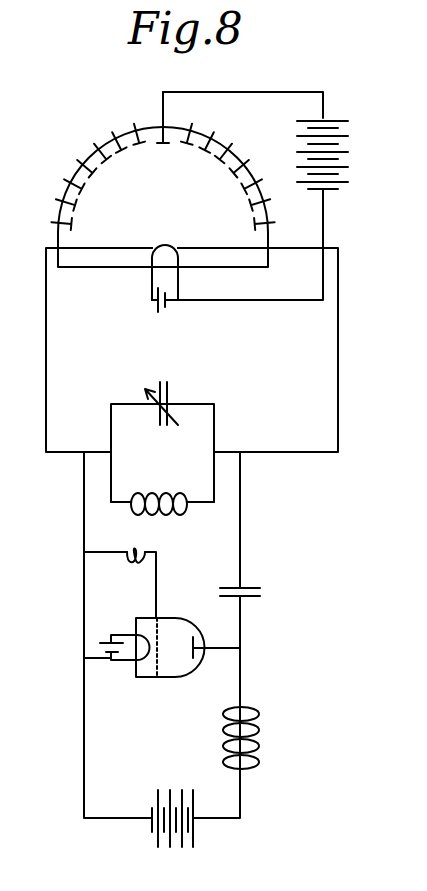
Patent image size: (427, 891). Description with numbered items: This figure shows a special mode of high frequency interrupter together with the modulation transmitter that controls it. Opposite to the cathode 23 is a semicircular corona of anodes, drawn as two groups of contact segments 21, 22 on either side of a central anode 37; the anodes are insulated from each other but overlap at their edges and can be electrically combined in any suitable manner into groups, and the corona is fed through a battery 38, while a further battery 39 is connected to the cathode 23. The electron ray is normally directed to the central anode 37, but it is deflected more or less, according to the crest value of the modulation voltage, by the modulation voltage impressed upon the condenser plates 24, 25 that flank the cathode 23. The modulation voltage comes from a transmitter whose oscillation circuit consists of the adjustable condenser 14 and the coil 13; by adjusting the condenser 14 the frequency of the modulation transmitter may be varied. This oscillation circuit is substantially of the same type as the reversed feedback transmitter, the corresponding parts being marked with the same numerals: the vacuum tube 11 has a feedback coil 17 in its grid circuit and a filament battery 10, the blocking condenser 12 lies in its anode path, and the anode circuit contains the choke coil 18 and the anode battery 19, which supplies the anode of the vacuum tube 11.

The filament battery 10 is at (121, 638).
The vacuum tube 11 is at (170, 647).
The blocking condenser 12 is at (243, 582).
The coil of the wave generating circuit 13 is at (162, 493).
The adjustable condenser 14 is at (162, 435).
The grid leak / inductance 17 is at (134, 566).
The choke coil of the anode circuit 18 is at (252, 737).
The anode battery 19 is at (187, 819).
The contact segments (left) 21 is at (98, 177).
The contact segments (right) 22 is at (228, 177).
The cathode 23 is at (165, 272).
The condenser plate 24 is at (147, 253).
The condenser plate 25 is at (190, 253).
The center contact 37 is at (163, 131).
The battery 38 is at (335, 155).
The battery 39 is at (171, 306).